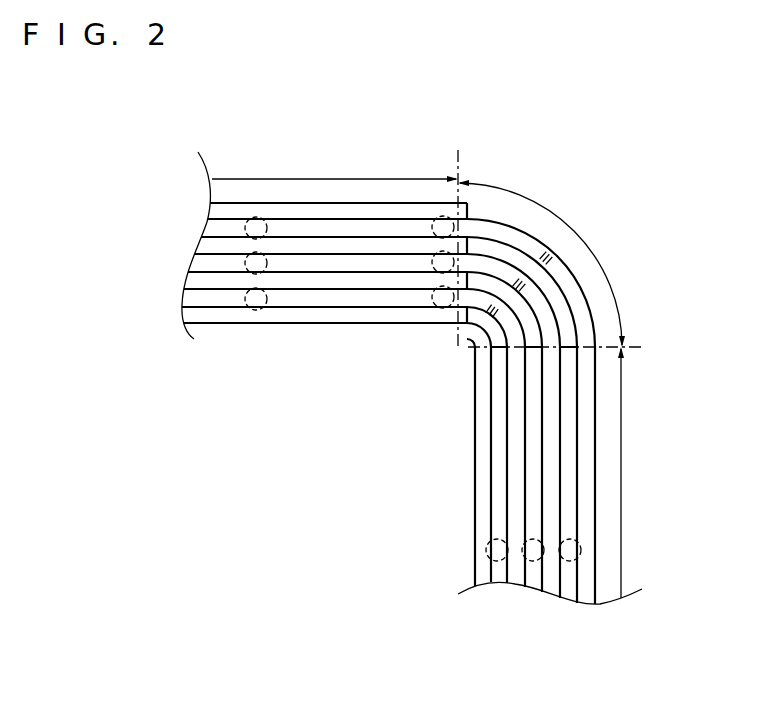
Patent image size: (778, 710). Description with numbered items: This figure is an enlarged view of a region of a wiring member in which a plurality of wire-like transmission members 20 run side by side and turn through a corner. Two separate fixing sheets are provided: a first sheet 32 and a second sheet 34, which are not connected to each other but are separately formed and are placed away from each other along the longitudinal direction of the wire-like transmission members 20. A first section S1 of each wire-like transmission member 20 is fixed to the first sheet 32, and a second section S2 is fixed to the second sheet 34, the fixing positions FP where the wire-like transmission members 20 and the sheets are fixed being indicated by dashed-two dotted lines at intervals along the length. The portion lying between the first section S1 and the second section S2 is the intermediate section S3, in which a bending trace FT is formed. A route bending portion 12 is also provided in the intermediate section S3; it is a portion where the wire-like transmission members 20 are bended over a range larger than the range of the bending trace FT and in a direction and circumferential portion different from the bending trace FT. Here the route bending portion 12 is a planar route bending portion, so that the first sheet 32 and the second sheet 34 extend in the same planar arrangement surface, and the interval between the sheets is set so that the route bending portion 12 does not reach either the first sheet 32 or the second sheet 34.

The route bending portion 12 is at (379, 378).
The wire-like transmission member 20 is at (187, 298).
The first sheet 32 is at (305, 323).
The second sheet 34 is at (474, 478).
The fixing position FP is at (246, 302).
The bending trace FT is at (543, 264).
The first section S1 is at (335, 161).
The second section S2 is at (639, 472).
The intermediate section S3 is at (541, 263).